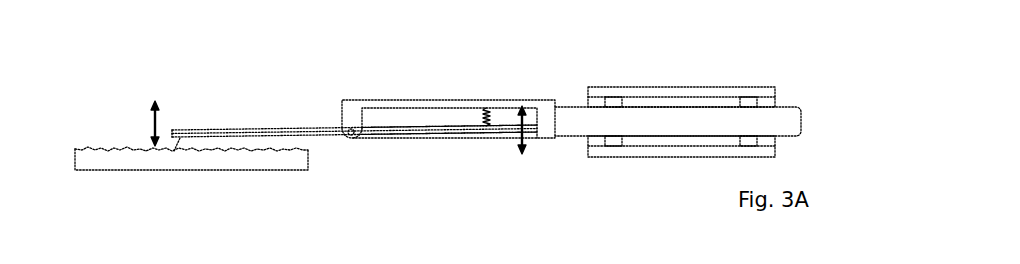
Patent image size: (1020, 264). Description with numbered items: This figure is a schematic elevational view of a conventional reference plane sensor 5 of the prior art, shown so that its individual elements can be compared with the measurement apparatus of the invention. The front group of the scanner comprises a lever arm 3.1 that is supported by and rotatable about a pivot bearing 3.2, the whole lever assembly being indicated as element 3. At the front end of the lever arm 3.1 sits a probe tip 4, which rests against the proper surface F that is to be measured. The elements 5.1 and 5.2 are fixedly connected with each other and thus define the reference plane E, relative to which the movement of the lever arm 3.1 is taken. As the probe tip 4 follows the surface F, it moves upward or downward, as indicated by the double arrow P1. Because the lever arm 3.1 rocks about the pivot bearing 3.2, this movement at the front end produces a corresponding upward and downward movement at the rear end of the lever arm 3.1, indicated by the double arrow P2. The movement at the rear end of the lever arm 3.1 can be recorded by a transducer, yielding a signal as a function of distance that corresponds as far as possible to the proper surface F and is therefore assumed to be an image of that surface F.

The surface F is at (110, 150).
The double arrow P1 is at (150, 110).
The blade 3 is at (354, 143).
The lever arm 3.1 is at (442, 128).
The pivot bearing 3.2 is at (345, 151).
The probe tip 4 is at (183, 141).
The reference plane sensor 5 is at (580, 82).
The element 5.1 is at (418, 108).
The element 5.2 is at (755, 115).
The double arrow P2 is at (519, 118).
The reference plane E is at (650, 108).